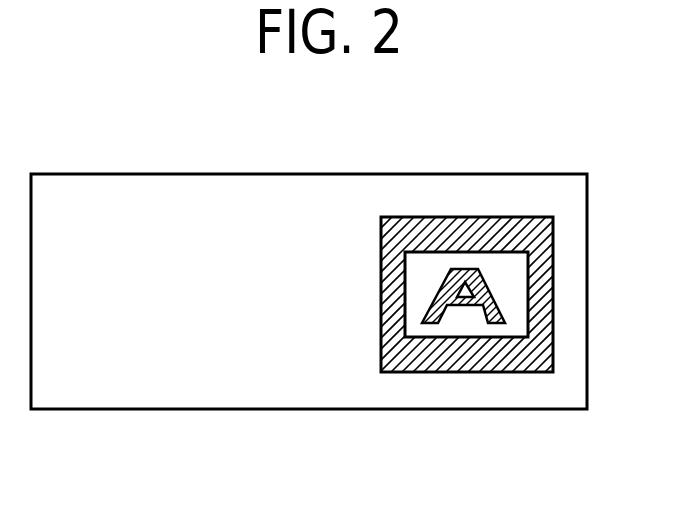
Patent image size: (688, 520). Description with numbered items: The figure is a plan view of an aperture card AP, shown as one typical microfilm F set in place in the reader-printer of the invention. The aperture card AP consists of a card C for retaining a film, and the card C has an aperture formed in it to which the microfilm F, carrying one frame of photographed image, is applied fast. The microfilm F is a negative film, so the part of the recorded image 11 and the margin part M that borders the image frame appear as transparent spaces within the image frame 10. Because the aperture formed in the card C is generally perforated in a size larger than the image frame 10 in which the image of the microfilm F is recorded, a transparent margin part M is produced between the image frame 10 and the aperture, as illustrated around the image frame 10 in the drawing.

The aperture card AP is at (309, 255).
The card C is at (300, 197).
The microfilm F is at (457, 296).
The image frame 10 is at (508, 272).
The recorded image 11 is at (467, 272).
The margin part M is at (468, 355).